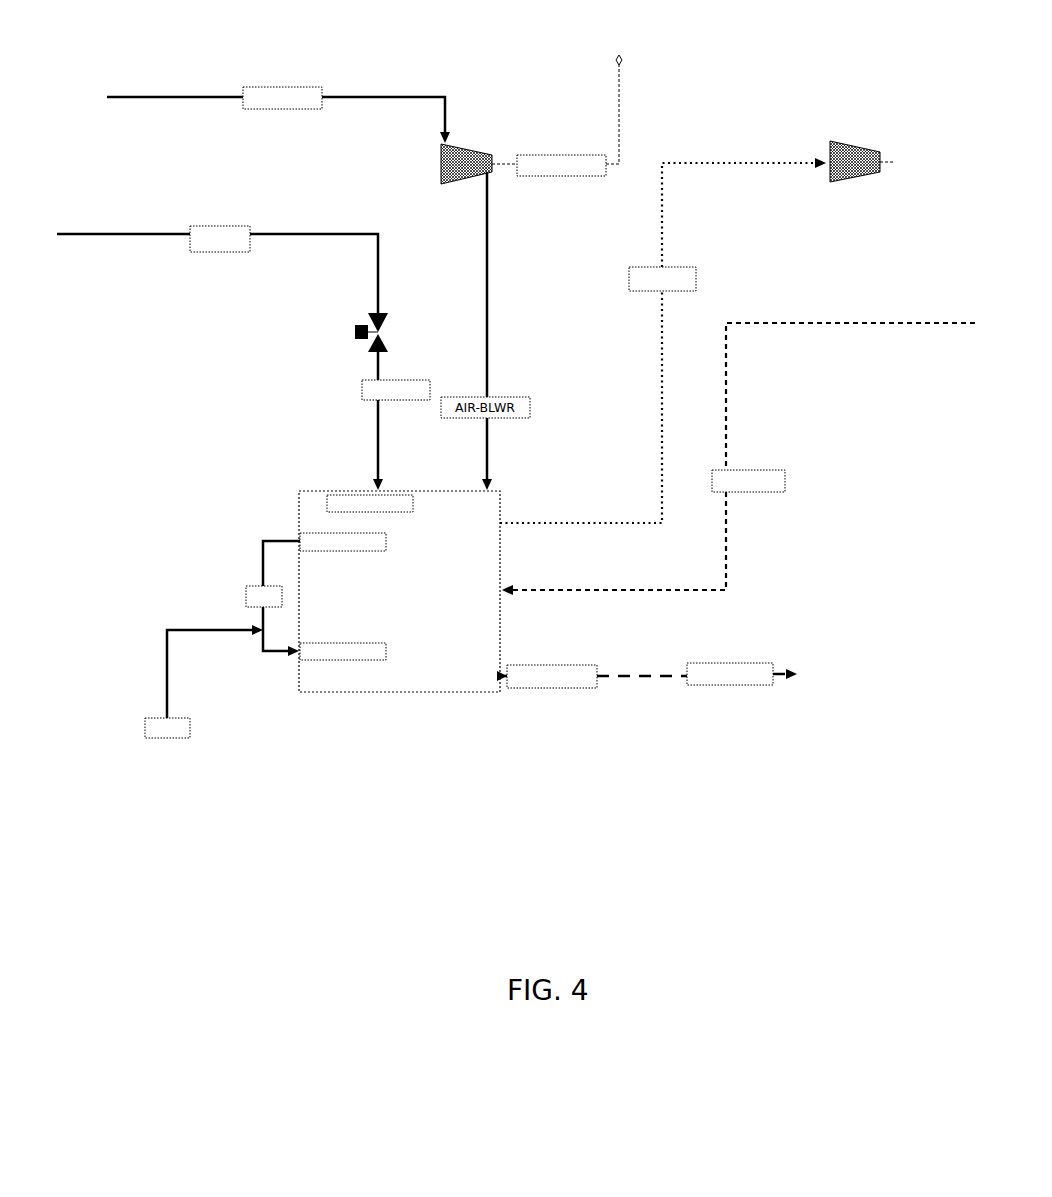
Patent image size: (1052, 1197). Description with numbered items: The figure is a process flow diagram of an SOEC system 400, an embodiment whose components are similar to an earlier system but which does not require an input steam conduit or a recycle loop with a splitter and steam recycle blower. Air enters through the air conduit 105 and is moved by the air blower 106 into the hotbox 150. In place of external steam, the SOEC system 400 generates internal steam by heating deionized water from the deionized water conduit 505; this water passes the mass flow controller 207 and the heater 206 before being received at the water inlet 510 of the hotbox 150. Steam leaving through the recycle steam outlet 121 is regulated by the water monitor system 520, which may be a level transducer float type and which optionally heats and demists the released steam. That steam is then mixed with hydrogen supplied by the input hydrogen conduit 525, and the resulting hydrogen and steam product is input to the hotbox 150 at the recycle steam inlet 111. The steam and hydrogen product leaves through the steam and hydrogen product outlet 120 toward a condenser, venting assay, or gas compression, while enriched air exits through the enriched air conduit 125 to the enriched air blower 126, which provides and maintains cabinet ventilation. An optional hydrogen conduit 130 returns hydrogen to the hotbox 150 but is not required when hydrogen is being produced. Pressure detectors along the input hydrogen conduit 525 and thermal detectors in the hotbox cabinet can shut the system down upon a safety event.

The air conduit 105 is at (278, 106).
The air blower 106 is at (517, 110).
The deionized water conduit 505 is at (217, 260).
The mass flow controller 207 is at (388, 332).
The heater 206 is at (396, 421).
The hotbox 150 is at (399, 591).
The water inlet 510 is at (386, 503).
The recycle steam outlet 121 is at (340, 594).
The water monitor system 520 is at (269, 587).
The input hydrogen conduit 525 is at (204, 681).
The recycle steam inlet 111 is at (359, 651).
The steam and hydrogen product outlet 120 is at (503, 670).
The enriched air conduit 125 is at (663, 335).
The enriched air blower 126 is at (862, 154).
The optional hydrogen conduit 130 is at (738, 450).
The SOEC system 400 is at (522, 1045).